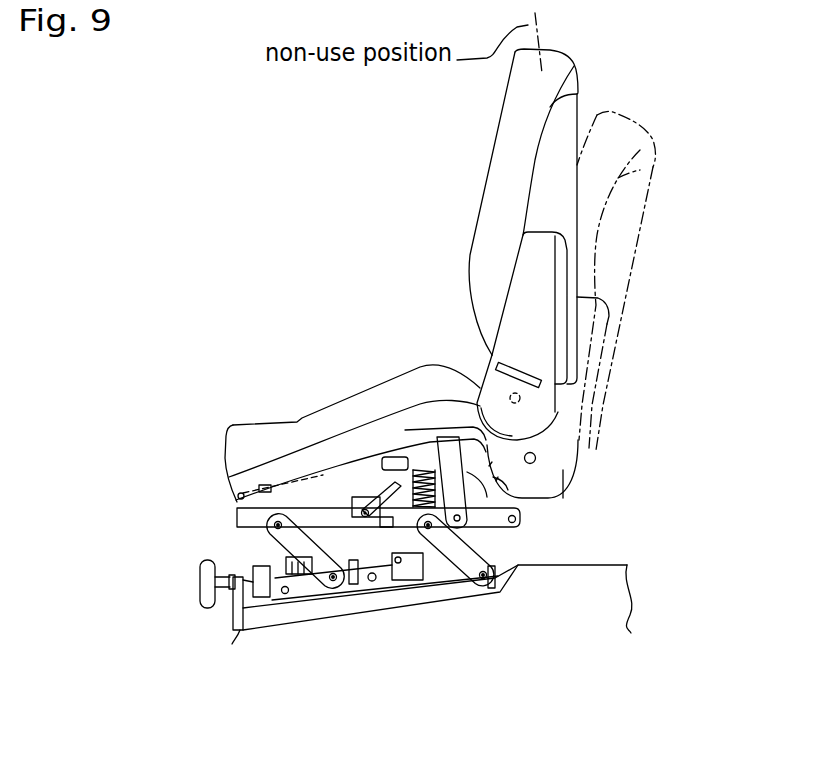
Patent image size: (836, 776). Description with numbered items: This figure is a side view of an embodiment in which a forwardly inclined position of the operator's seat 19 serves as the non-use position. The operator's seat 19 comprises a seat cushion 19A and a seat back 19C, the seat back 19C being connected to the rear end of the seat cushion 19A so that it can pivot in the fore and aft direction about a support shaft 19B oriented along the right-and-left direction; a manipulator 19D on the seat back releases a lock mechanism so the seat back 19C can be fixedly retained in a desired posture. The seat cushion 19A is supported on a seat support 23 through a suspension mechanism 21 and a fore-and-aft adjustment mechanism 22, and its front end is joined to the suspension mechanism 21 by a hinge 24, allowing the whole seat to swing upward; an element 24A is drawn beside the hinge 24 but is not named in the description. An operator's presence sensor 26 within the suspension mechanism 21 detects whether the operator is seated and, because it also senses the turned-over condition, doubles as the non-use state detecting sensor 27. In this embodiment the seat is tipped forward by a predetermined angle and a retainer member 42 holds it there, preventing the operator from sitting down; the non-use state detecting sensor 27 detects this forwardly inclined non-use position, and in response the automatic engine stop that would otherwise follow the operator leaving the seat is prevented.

The operator's seat 19 is at (489, 163).
The seat cushion 19A is at (419, 375).
The support shaft 19B is at (524, 401).
The seat back 19C is at (472, 226).
The manipulator 19D is at (524, 368).
The suspension mechanism 21 is at (490, 552).
The fore-and-aft adjustment mechanism 22 is at (377, 608).
The seat support 23 is at (290, 655).
The hinge 24 is at (241, 498).
The operating knob 24A is at (240, 497).
The operator's presence sensor 26 is at (347, 507).
The non-use state detecting sensor 27 is at (254, 492).
The retainer member 42 is at (423, 417).